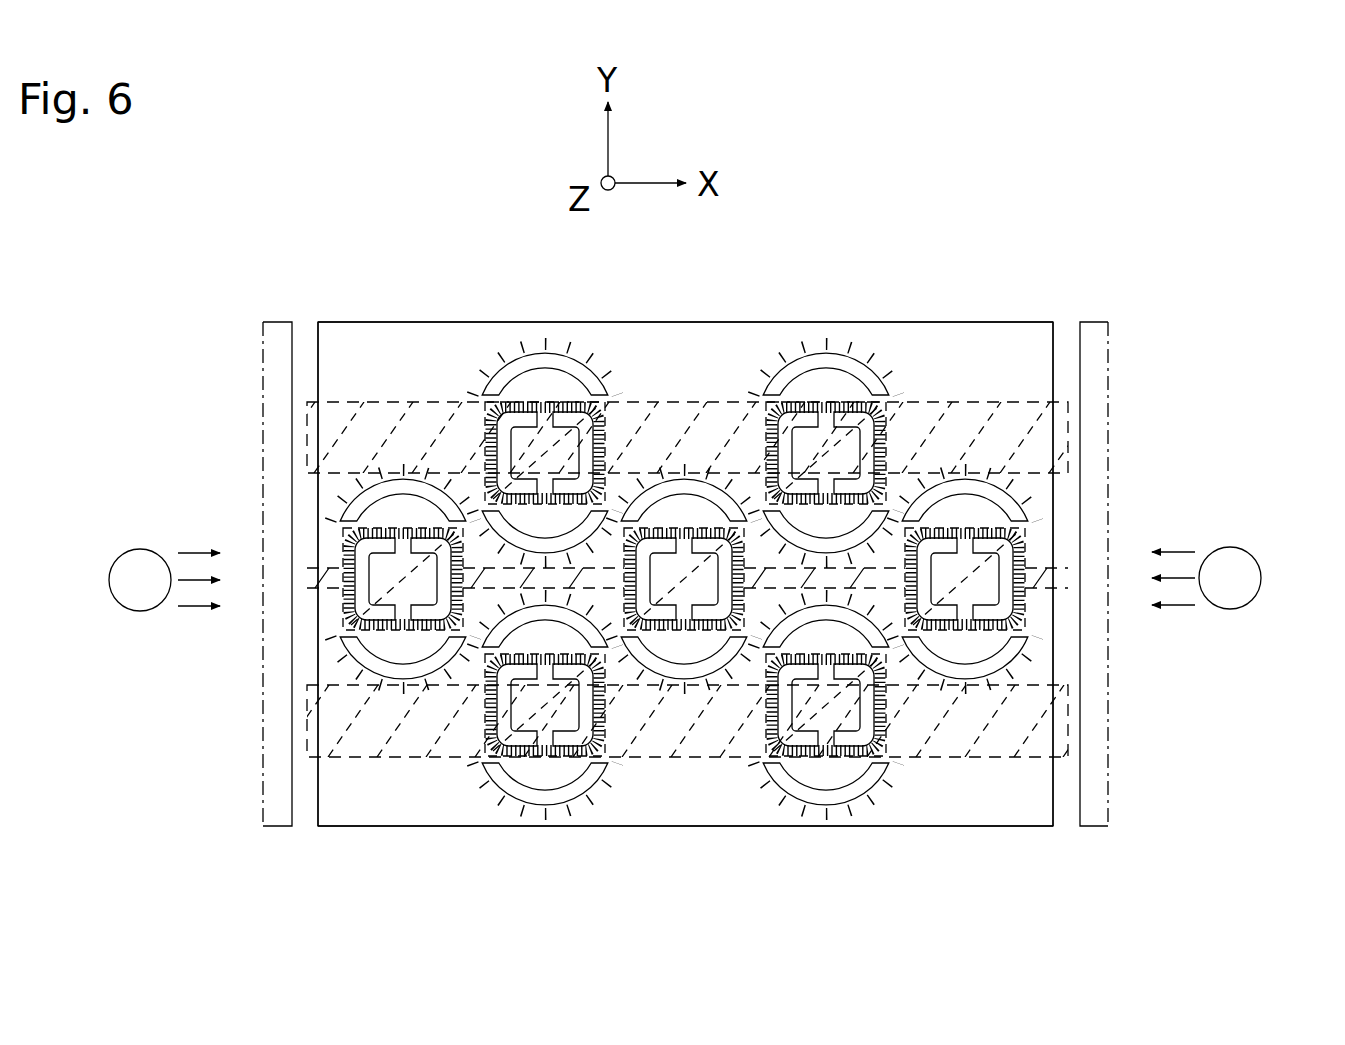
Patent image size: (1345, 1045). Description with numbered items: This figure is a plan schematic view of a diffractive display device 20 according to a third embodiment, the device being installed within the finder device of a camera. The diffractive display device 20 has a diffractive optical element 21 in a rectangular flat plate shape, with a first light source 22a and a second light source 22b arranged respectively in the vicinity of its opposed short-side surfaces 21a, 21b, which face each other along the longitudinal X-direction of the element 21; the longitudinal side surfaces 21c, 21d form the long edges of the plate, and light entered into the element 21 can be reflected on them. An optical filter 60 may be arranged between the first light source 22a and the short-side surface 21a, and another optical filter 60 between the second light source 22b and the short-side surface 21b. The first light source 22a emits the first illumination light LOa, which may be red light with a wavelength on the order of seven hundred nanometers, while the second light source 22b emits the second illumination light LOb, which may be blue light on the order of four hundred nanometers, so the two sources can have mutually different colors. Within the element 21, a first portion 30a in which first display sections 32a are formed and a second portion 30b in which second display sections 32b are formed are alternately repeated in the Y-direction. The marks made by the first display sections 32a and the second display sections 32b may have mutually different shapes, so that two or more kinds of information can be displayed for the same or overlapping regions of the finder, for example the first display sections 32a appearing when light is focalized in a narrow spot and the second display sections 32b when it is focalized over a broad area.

The diffractive display device 20 is at (1070, 265).
The diffractive optical element 21 is at (884, 320).
The short-side surface 21a is at (318, 522).
The short-side surface 21b is at (1055, 560).
The longitudinal side surface 21c is at (445, 322).
The longitudinal side surface 21d is at (1053, 828).
The first light source 22a is at (122, 604).
The second light source 22b is at (1246, 556).
The first portion 30a is at (1072, 427).
The second portion 30b is at (1024, 380).
The first display section 32a is at (500, 430).
The second display section 32b is at (485, 513).
The optical filter 60 is at (265, 352).
The first illumination light LOa is at (185, 610).
The second illumination light LOb is at (1180, 617).